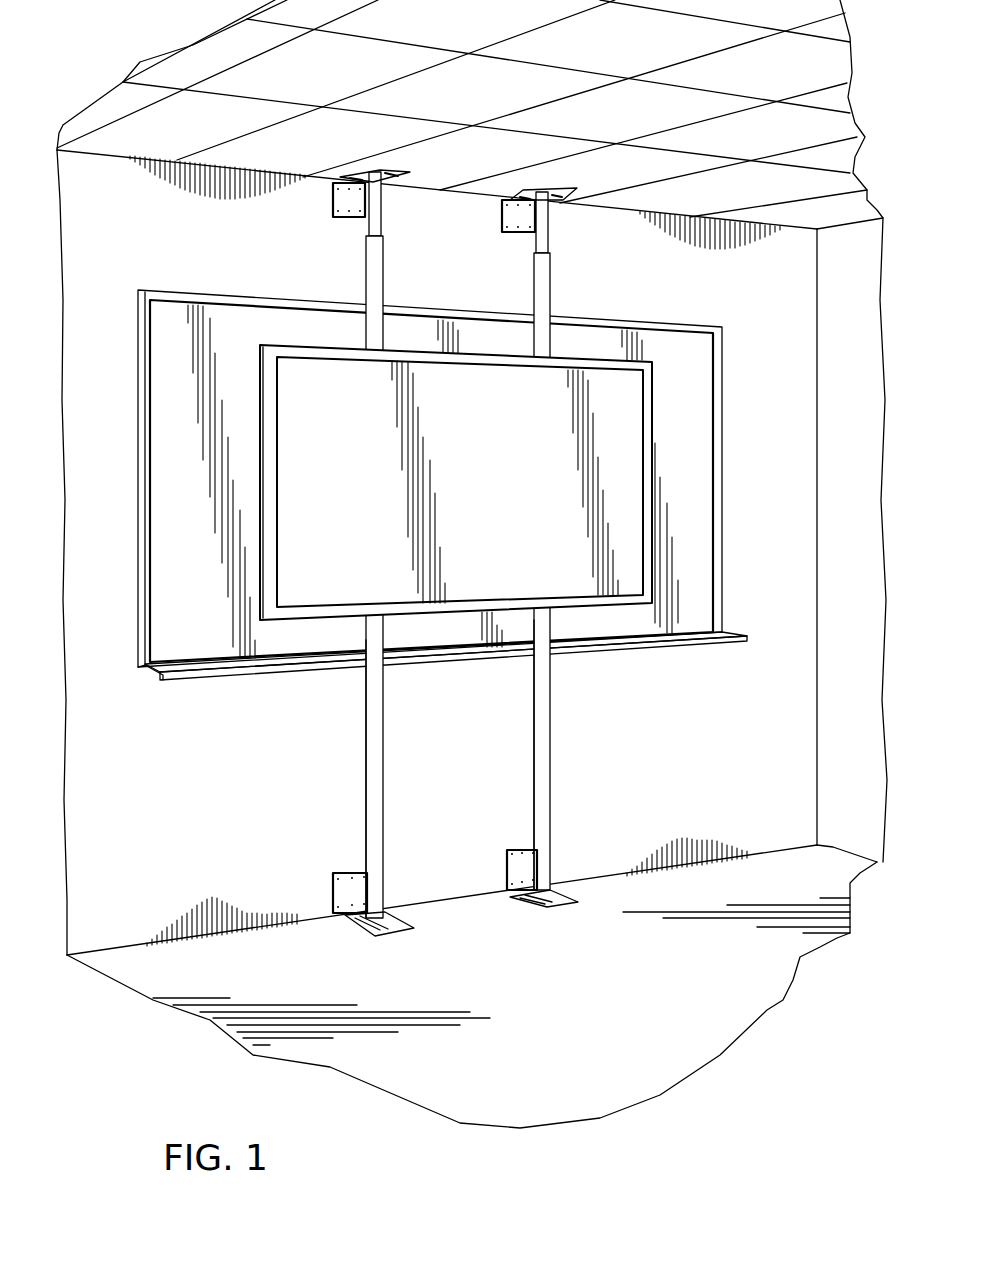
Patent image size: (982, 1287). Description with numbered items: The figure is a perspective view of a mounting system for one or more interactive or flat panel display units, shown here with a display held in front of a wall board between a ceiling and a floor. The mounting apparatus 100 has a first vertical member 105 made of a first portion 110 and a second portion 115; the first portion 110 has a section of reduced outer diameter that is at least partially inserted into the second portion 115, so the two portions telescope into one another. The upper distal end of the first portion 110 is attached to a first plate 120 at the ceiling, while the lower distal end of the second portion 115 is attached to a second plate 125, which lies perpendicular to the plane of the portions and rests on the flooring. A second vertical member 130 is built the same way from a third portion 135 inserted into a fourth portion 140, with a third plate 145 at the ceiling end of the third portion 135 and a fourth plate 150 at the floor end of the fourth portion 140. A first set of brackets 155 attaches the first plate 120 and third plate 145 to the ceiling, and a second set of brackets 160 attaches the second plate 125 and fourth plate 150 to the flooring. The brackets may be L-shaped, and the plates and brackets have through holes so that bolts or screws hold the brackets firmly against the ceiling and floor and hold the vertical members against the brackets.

The mounting apparatus 100 is at (463, 559).
The first vertical member 105 is at (319, 545).
The first portion 110 is at (369, 230).
The second portion 115 is at (366, 721).
The first plate 120 is at (392, 171).
The second plate 125 is at (397, 932).
The second vertical member 130 is at (600, 541).
The third portion 135 is at (549, 230).
The fourth portion 140 is at (550, 703).
The third plate 145 is at (560, 189).
The fourth plate 150 is at (555, 907).
The first set of brackets 155 is at (333, 200).
The second set of brackets 160 is at (343, 892).